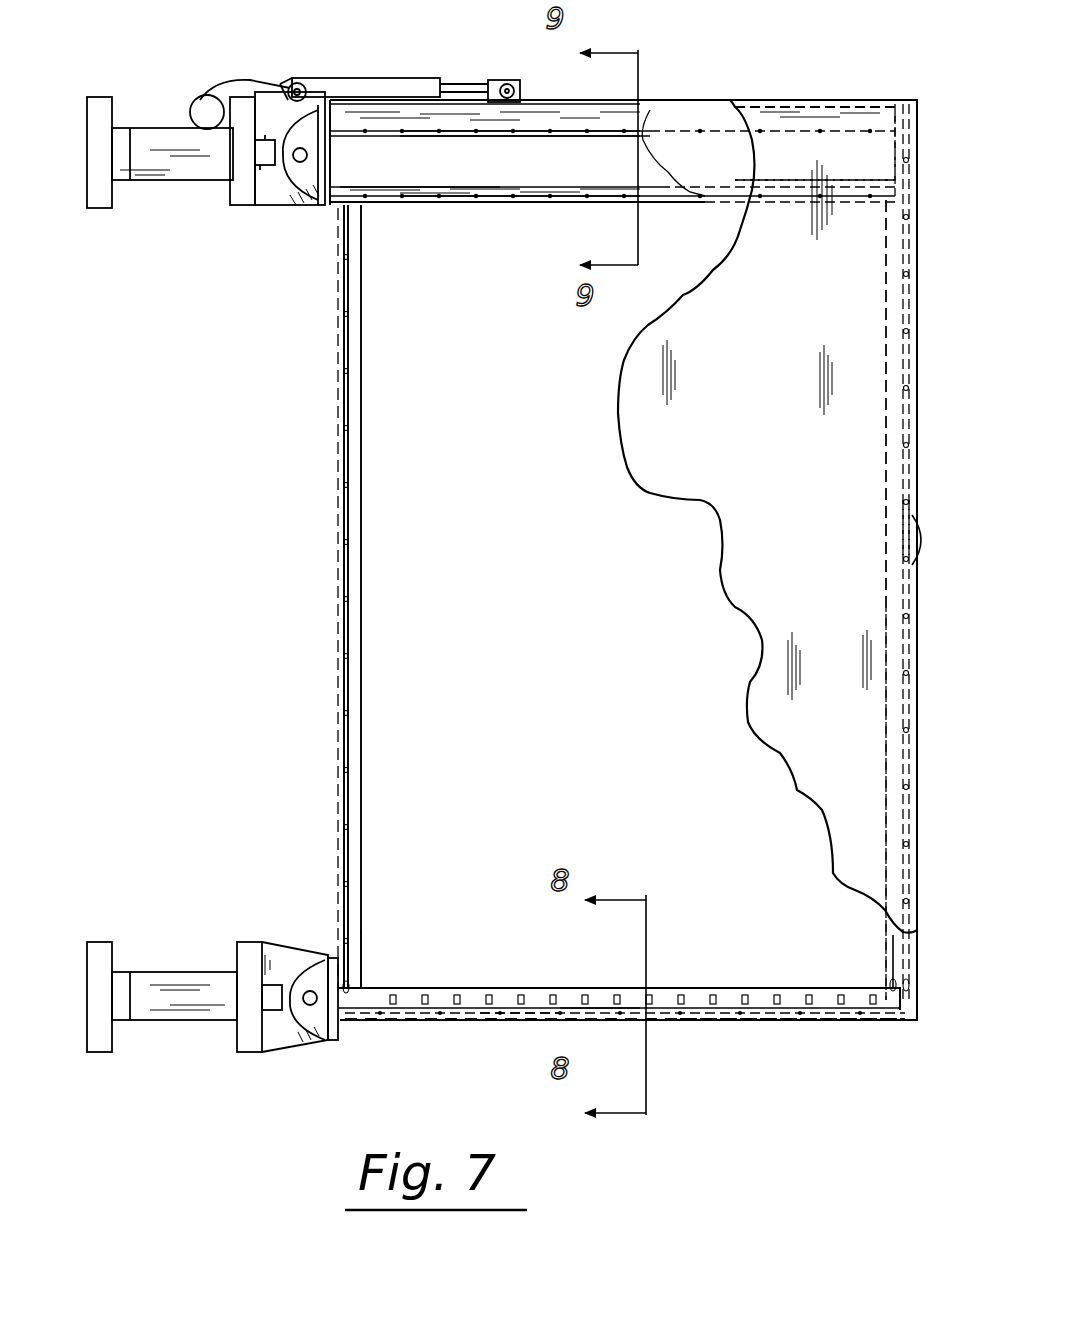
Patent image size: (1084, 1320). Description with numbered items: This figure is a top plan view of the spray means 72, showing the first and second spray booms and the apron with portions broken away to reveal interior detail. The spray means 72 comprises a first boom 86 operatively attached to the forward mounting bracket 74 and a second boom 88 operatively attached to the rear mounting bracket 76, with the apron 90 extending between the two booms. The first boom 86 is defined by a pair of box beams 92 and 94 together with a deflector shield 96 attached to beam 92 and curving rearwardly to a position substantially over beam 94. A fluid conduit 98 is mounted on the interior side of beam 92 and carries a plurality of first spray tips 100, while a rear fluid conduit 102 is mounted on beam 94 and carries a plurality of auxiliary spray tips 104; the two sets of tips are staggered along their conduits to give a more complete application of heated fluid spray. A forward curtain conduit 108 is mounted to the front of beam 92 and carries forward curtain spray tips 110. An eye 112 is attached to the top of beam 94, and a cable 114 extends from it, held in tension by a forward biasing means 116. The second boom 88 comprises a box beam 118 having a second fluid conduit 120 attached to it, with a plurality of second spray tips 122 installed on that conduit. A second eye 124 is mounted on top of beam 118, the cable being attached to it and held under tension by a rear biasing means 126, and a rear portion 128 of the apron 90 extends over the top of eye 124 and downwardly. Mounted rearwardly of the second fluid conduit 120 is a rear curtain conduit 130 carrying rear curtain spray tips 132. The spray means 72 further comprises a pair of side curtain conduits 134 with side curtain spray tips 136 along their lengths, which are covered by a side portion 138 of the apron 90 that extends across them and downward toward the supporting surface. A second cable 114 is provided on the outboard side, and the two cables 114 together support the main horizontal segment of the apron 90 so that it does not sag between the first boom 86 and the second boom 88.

The spray means 72 is at (312, 514).
The forward mounting bracket 74 is at (198, 40).
The rear mounting bracket 76 is at (160, 862).
The first boom 86 is at (790, 55).
The second boom 88 is at (708, 1080).
The apron 90 is at (778, 422).
The box beam 92 is at (540, 105).
The box beam 94 is at (477, 207).
The deflector shield 96 is at (730, 172).
The fluid conduit 98 is at (537, 135).
The first spray tips 100 is at (532, 131).
The rear fluid conduit 102 is at (482, 207).
The auxiliary spray tips 104 is at (568, 200).
The forward curtain conduit 108 is at (692, 100).
The forward curtain spray tips 110 is at (650, 110).
The eye 112 is at (360, 217).
The cable 114 is at (363, 398).
The forward biasing means 116 is at (362, 232).
The box beam 118 is at (432, 993).
The second fluid conduit 120 is at (700, 988).
The second spray tips 122 is at (573, 1003).
The second eye 124 is at (365, 985).
The rear biasing means 126 is at (370, 945).
The rear portion of apron 128 is at (790, 1030).
The rear curtain conduit 130 is at (525, 1015).
The rear curtain spray tips 132 is at (710, 1020).
The side curtain conduits 134 is at (347, 510).
The side curtain spray tips 136 is at (347, 592).
The side portion of apron 138 is at (916, 520).